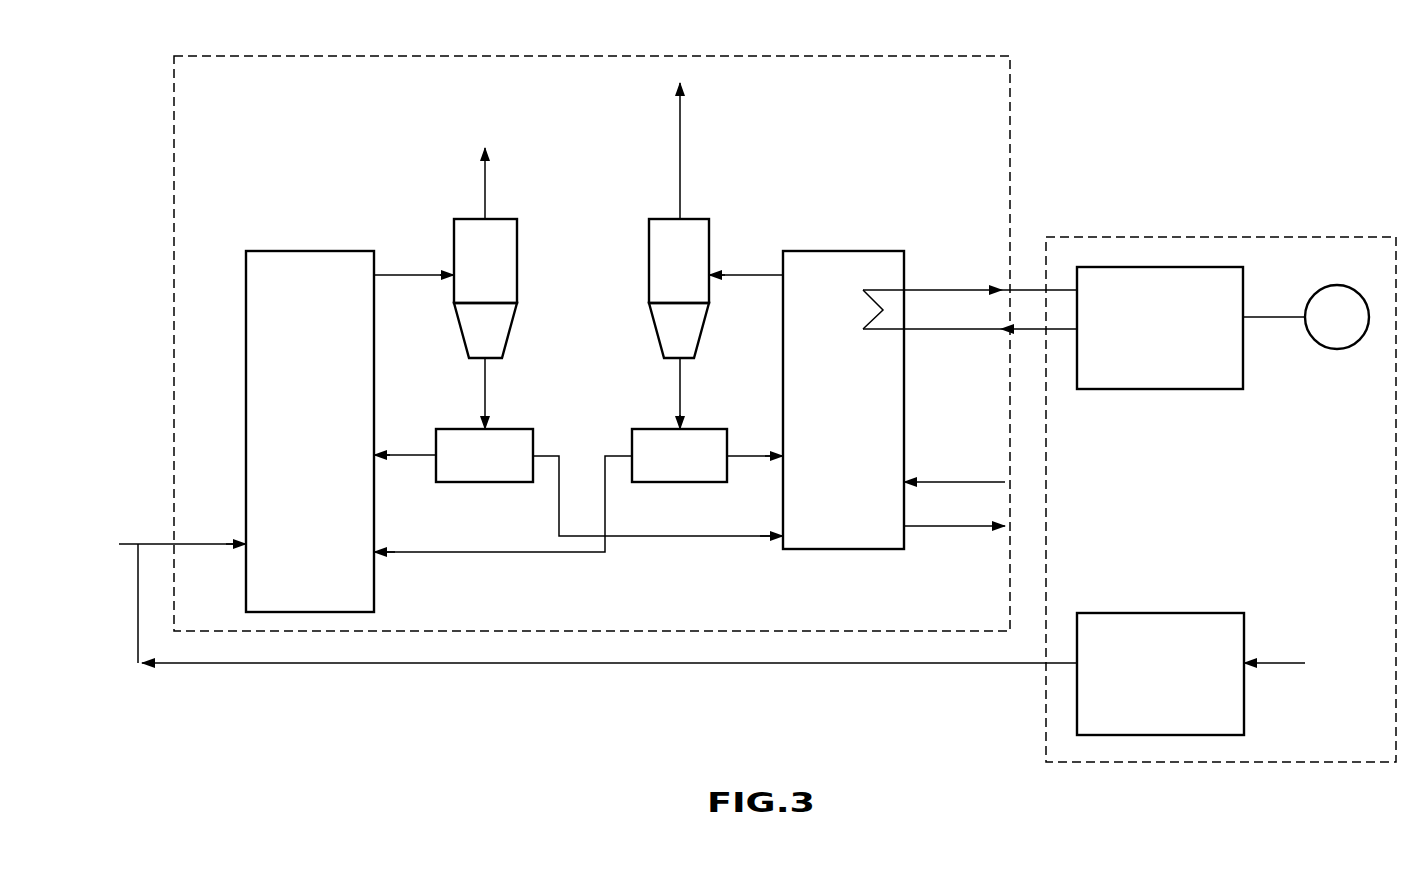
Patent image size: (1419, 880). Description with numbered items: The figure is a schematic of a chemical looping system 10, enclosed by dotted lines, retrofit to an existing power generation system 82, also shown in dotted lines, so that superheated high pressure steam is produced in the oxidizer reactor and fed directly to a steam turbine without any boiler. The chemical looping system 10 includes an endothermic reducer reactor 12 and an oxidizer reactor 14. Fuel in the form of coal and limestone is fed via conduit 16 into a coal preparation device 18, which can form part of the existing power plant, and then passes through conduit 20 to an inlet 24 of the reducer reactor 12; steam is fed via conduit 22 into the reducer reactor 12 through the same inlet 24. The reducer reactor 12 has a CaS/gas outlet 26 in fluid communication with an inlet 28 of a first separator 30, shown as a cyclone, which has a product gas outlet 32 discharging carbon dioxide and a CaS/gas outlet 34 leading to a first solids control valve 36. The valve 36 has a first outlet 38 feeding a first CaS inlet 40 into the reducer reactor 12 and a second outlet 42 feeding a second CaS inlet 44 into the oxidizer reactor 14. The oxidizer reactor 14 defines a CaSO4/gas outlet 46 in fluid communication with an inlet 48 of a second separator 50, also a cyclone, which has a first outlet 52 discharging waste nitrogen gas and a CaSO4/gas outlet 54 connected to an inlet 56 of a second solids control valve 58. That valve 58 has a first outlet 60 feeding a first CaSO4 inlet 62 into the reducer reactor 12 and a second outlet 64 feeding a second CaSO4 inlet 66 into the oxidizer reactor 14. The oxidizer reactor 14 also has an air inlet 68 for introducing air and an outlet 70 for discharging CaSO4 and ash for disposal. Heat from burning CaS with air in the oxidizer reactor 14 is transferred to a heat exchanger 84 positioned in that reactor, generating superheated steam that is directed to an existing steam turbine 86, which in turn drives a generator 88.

The chemical looping system 10 is at (962, 55).
The reducer reactor 12 is at (301, 380).
The oxidizer reactor 14 is at (843, 400).
The conduit 16 is at (1285, 663).
The coal preparation device 18 is at (1146, 668).
The conduit 20 is at (507, 663).
The conduit 22 is at (130, 544).
The inlet 24 is at (248, 544).
The CaS/gas outlet 26 is at (374, 275).
The inlet 28 is at (453, 276).
The first separator 30 is at (473, 280).
The product gas outlet 32 is at (485, 201).
The CaS/gas outlet 34 is at (484, 374).
The first solids control valve 36 is at (473, 472).
The first outlet 38 is at (436, 456).
The first CaS inlet 40 is at (372, 455).
The second outlet 42 is at (535, 456).
The second CaS inlet 44 is at (785, 536).
The CaSO4/gas outlet 46 is at (786, 275).
The inlet 48 is at (709, 276).
The second separator 50 is at (667, 280).
The first outlet 52 is at (682, 217).
The CaSO4/gas outlet 54 is at (681, 362).
The inlet 56 is at (682, 428).
The second solids control valve 58 is at (666, 472).
The first outlet 60 is at (628, 455).
The first CaSO4 inlet 62 is at (372, 551).
The second outlet 64 is at (727, 456).
The second CaSO4 inlet 66 is at (785, 456).
The air inlet 68 is at (904, 480).
The outlet 70 is at (905, 526).
The power generation system 82 is at (1330, 236).
The heat exchanger 84 is at (930, 290).
The steam turbine 86 is at (1145, 338).
The generator 88 is at (1325, 328).